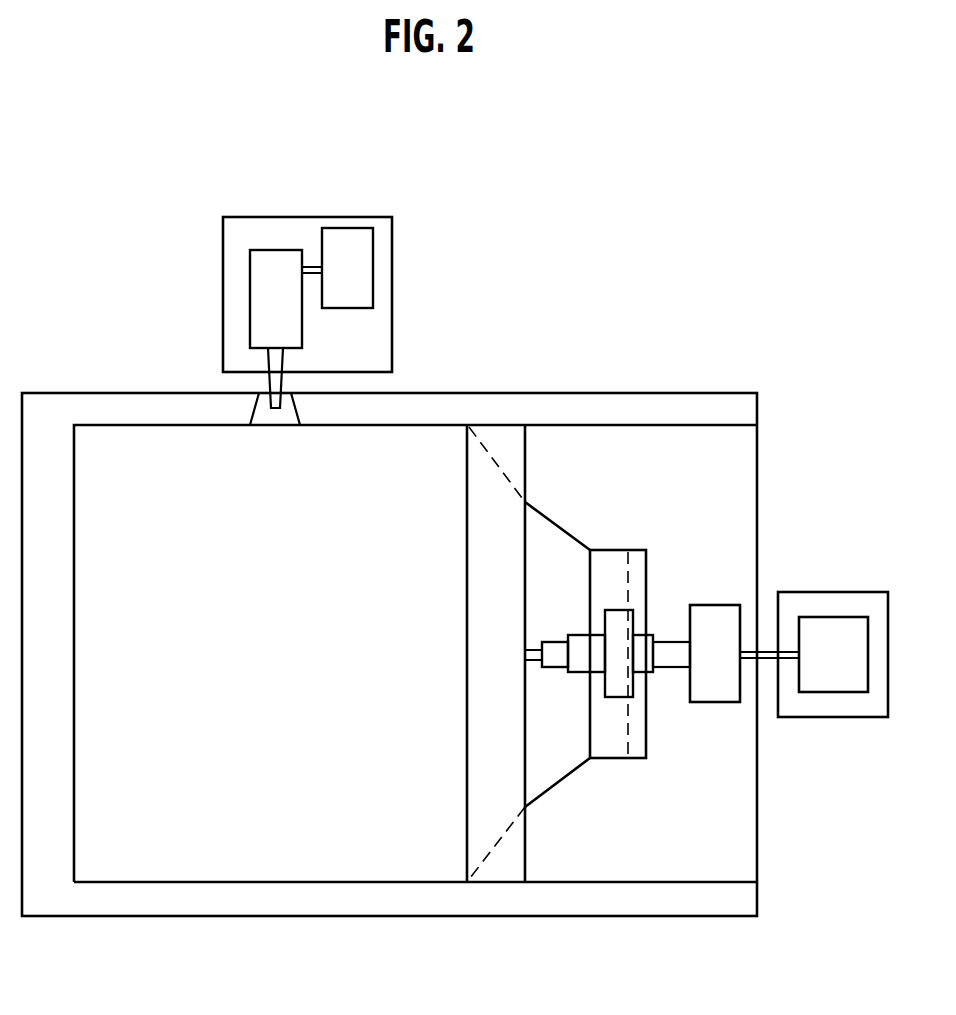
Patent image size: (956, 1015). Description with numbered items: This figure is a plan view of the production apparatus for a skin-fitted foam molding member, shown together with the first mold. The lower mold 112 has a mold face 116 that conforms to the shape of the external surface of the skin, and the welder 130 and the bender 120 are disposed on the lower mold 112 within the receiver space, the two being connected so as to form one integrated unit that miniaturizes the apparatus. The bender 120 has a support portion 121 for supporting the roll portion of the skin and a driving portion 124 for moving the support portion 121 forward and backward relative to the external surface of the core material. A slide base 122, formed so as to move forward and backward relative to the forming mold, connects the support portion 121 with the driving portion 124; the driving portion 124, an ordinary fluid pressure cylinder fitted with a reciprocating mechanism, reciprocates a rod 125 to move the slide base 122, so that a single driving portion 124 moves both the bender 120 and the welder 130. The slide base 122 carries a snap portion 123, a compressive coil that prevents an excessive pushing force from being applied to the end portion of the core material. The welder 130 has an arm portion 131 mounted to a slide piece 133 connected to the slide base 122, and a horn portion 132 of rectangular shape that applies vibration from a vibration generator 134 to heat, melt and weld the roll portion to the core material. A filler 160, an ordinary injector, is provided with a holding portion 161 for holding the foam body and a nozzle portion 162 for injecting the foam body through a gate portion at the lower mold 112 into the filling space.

The lower mold 112 is at (153, 900).
The mold face 116 is at (242, 857).
The bender 120 is at (793, 961).
The support portion 121 is at (543, 767).
The slide base 122 is at (635, 743).
The snap portion 123 is at (605, 745).
The driving portion 124 is at (720, 683).
The rod 125 is at (672, 657).
The welder 130 is at (710, 333).
The arm portion 131 is at (587, 655).
The horn portion 132 is at (508, 447).
The slide piece 133 is at (623, 635).
The vibration generator 134 is at (832, 630).
The filler 160 is at (462, 242).
The holding portion 161 is at (358, 269).
The nozzle portion 162 is at (275, 364).